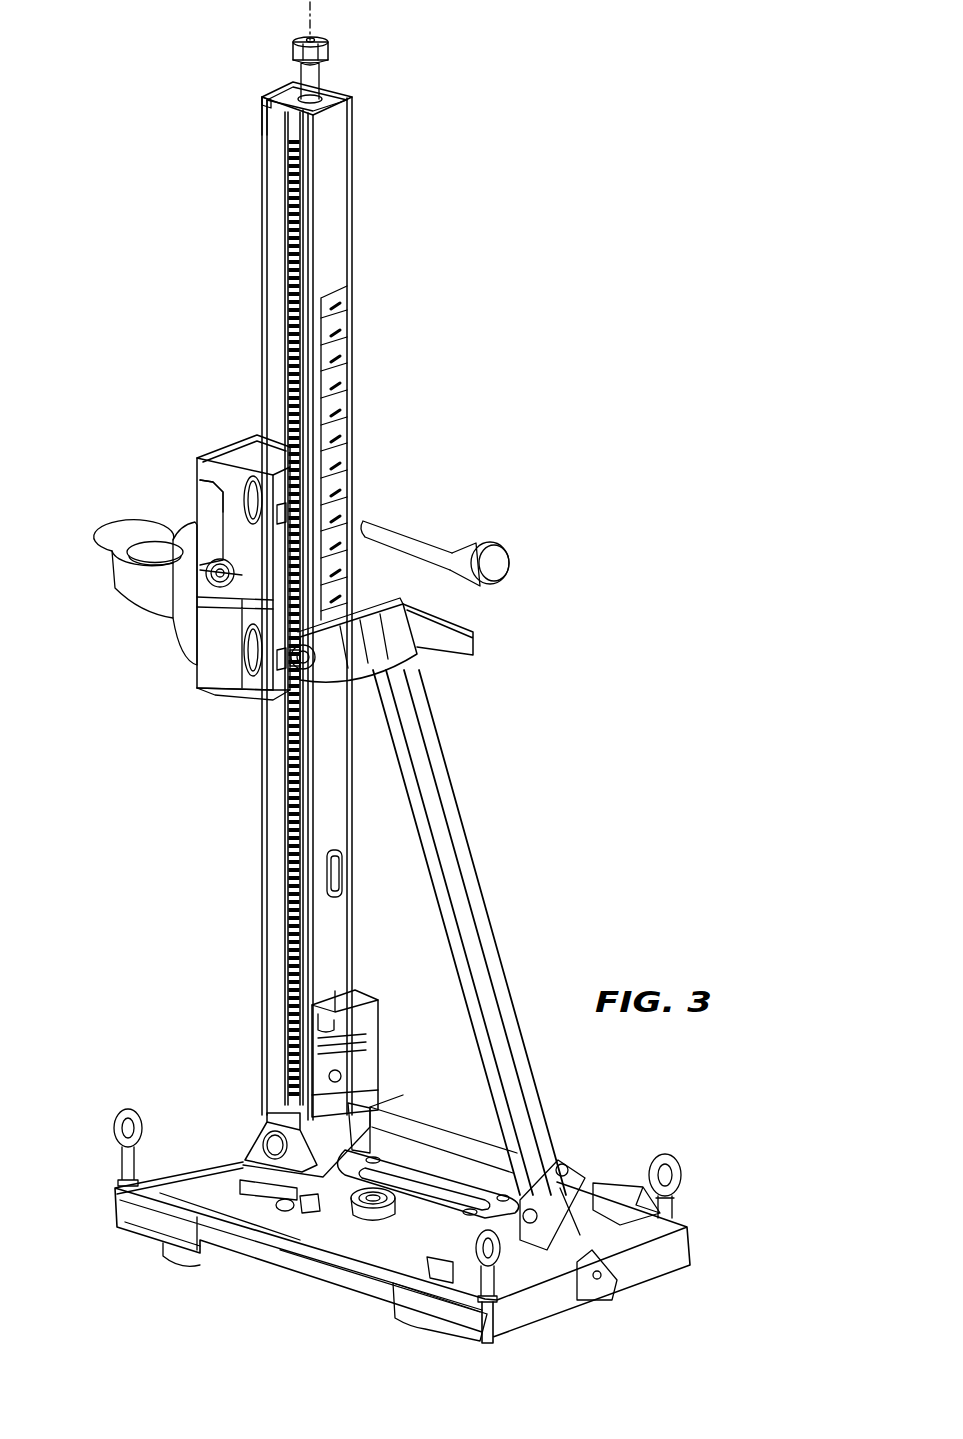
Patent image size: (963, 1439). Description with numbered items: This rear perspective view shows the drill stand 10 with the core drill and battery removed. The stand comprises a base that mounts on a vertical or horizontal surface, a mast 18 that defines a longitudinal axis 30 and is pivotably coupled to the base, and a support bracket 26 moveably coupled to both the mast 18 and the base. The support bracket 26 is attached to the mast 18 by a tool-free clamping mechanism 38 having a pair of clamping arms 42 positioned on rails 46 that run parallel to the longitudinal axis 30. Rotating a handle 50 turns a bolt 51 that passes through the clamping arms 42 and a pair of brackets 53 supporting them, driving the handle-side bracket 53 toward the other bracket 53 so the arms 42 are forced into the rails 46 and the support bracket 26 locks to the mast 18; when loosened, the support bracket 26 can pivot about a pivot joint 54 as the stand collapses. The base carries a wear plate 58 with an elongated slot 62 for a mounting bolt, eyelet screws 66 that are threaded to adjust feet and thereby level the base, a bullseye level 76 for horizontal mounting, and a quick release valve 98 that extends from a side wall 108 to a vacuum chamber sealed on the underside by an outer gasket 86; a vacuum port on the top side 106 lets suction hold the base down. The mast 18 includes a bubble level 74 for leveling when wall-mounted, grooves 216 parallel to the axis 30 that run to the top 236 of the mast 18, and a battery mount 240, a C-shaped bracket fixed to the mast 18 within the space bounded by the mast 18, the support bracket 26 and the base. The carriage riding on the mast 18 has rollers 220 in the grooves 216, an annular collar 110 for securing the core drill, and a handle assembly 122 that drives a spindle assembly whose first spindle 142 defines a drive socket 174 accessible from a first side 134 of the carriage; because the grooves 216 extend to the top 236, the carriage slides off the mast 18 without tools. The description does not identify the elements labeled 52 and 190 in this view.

The drill stand 10 is at (545, 368).
The mast 18 is at (335, 170).
The support bracket 26 is at (458, 832).
The longitudinal axis 30 is at (306, 14).
The clamping mechanism 38 is at (374, 592).
The clamping arms 42 is at (252, 661).
The rails 46 is at (303, 237).
The handle 50 is at (474, 636).
The bolt 51 is at (292, 660).
The base 52 is at (187, 1202).
The brackets 53 is at (345, 667).
The pivot joint 54 is at (602, 1278).
The wear plate 58 is at (457, 1183).
The elongated slot 62 is at (415, 1185).
The eyelet screws 66 is at (128, 1116).
The bubble level 74 is at (340, 868).
The bullseye level 76 is at (347, 1213).
The outer gasket 86 is at (418, 1330).
The quick release valve 98 is at (272, 1208).
The top side 106 is at (622, 1228).
The side wall 108 is at (292, 1208).
The annular collar 110 is at (127, 582).
The handle assembly 122 is at (382, 494).
The first side 134 is at (215, 625).
The first spindle 142 is at (201, 517).
The first non-cylindrical drive socket 174 is at (208, 571).
The handle 190 is at (421, 538).
The grooves 216 is at (265, 106).
The rollers 220 is at (264, 465).
The top 236 is at (331, 96).
The battery mount 240 is at (372, 1000).